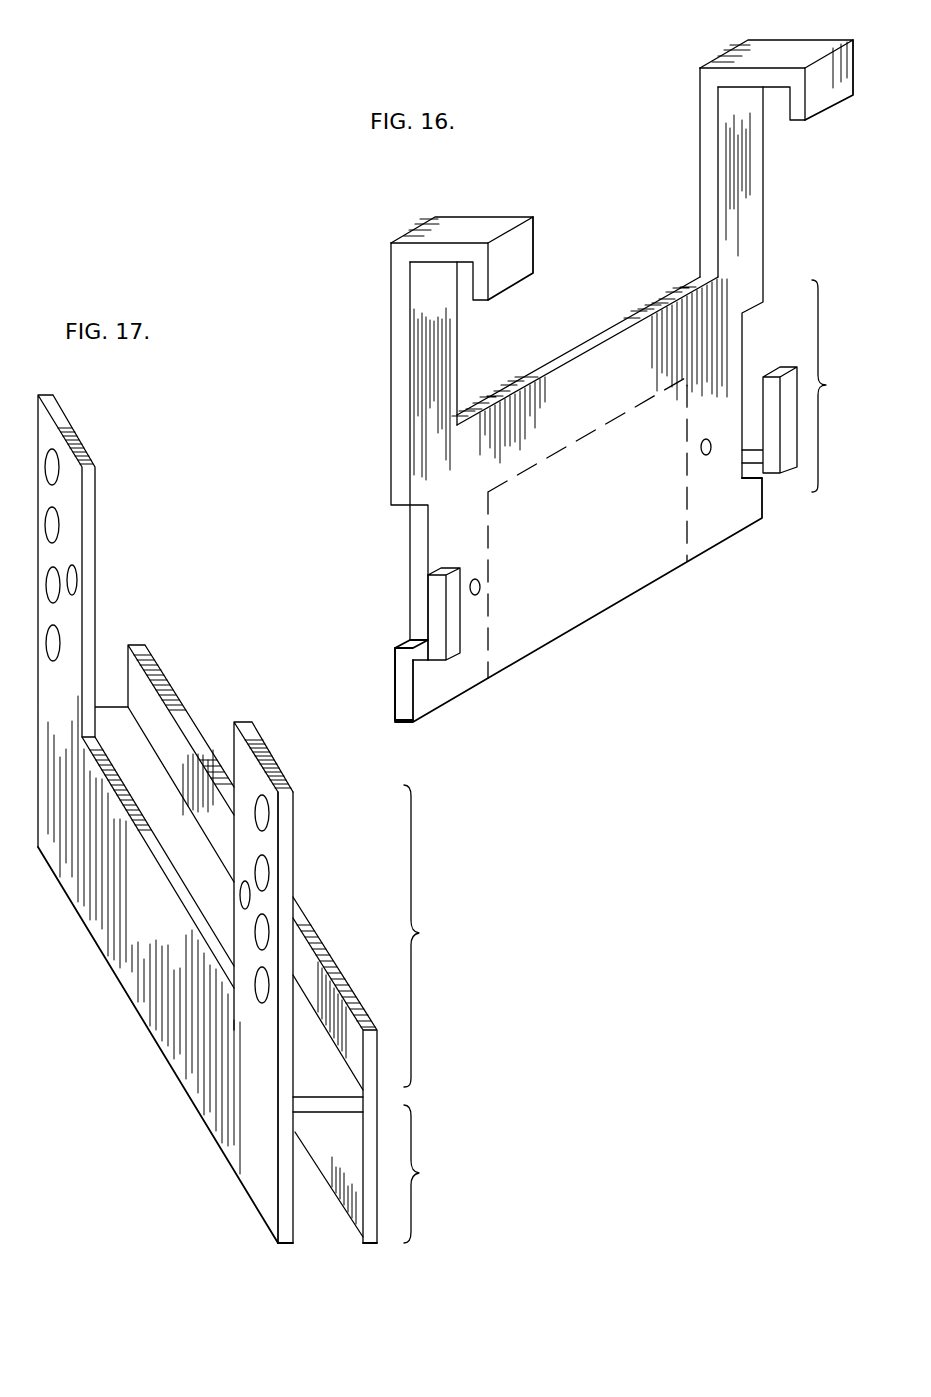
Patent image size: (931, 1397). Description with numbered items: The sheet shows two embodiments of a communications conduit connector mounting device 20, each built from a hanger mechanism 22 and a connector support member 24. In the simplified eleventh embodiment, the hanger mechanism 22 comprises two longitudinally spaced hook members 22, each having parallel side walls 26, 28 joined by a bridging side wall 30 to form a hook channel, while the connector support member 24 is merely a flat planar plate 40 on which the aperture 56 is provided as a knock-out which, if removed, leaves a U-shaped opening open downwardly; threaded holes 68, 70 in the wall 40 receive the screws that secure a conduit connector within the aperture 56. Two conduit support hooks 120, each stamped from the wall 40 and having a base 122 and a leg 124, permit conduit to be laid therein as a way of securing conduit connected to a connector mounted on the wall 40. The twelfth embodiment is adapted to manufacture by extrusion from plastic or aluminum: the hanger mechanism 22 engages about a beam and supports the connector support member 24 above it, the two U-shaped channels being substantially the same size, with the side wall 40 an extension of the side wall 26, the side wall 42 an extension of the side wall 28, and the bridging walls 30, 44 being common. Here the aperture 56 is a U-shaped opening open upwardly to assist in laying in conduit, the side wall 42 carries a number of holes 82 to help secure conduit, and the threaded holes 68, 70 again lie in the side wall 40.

In FIG. 16, the communications conduit connector mounting device 20 is at (365, 450).
In FIG. 17, the communications conduit connector mounting device 20 is at (148, 1066).
In FIG. 16, the hanger mechanism 22 is at (576, 174).
In FIG. 17, the hanger mechanism 22 is at (365, 1196).
In FIG. 16, the connector support member 24 is at (835, 386).
In FIG. 17, the connector support member 24 is at (428, 936).
In FIG. 16, the side wall 26 is at (391, 372).
In FIG. 17, the side wall 26 is at (285, 1170).
In FIG. 16, the side wall 28 is at (480, 277).
In FIG. 17, the side wall 28 is at (370, 1207).
In FIG. 16, the bridging side wall 30 is at (455, 250).
In FIG. 17, the bridging side wall 30 is at (327, 1107).
In FIG. 16, the side wall 40 is at (707, 530).
In FIG. 17, the side wall 40 is at (290, 815).
In FIG. 17, the side wall 42 is at (370, 1047).
In FIG. 17, the bridging side wall 44 is at (310, 1097).
In FIG. 16, the major aperture 56 is at (622, 577).
In FIG. 17, the major aperture 56 is at (95, 515).
In FIG. 16, the threaded hole 68 is at (478, 592).
In FIG. 17, the threaded hole 68 is at (75, 580).
In FIG. 16, the threaded hole 70 is at (713, 455).
In FIG. 17, the threaded hole 70 is at (243, 893).
In FIG. 17, the holes 82 is at (53, 513).
In FIG. 16, the conduit support hook 120 is at (790, 360).
In FIG. 16, the base 122 is at (437, 663).
In FIG. 16, the leg 124 is at (432, 597).